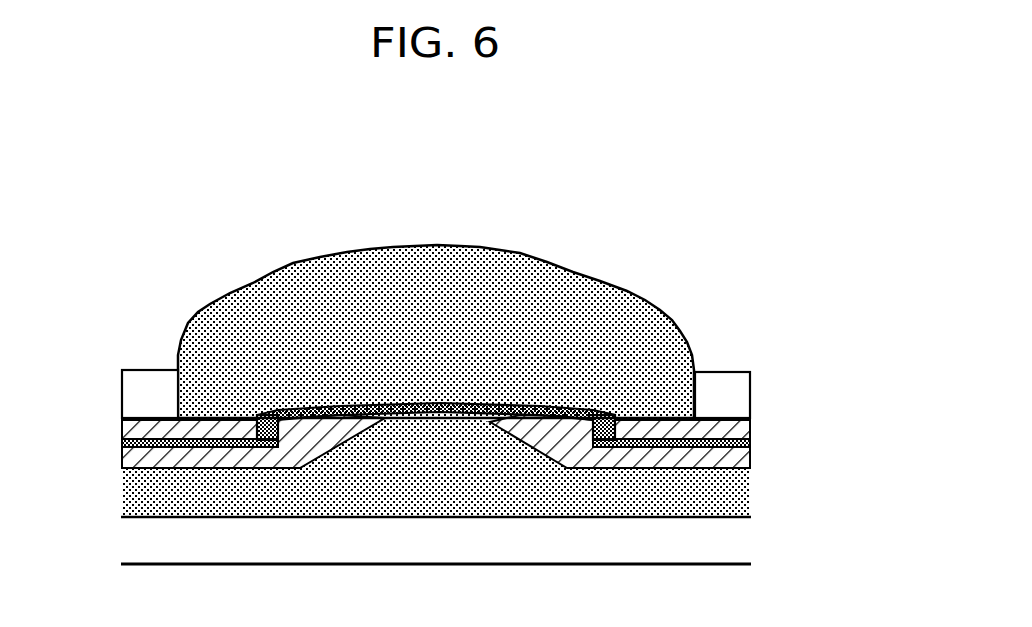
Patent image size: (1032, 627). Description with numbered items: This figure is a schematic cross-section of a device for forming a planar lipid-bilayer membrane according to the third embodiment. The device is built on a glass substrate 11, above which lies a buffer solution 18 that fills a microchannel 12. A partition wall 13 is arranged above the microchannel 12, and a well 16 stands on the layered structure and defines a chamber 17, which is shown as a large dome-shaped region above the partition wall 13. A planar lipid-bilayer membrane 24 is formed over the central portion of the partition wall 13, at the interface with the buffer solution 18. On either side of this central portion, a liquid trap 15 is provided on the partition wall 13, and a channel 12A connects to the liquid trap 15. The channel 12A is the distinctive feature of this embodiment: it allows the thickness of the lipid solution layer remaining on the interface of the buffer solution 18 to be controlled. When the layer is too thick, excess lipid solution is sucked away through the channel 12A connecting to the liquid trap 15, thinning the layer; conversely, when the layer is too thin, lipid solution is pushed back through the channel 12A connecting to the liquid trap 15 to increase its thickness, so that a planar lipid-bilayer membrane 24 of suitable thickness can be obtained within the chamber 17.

The glass substrate 11 is at (725, 542).
The microchannel 12 is at (757, 480).
The channel 12A is at (188, 440).
The partition wall 13 is at (751, 436).
The liquid trap 15 is at (271, 418).
The well 16 is at (151, 384).
The chamber 17 is at (672, 298).
The buffer solution 18 is at (727, 495).
The planar lipid-bilayer membrane 24 is at (455, 405).